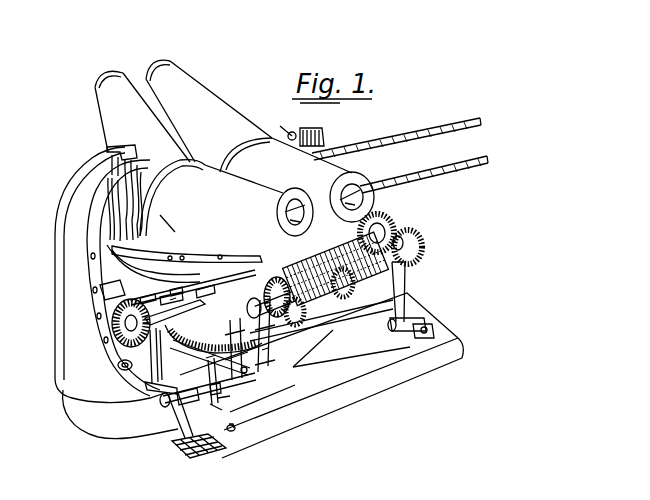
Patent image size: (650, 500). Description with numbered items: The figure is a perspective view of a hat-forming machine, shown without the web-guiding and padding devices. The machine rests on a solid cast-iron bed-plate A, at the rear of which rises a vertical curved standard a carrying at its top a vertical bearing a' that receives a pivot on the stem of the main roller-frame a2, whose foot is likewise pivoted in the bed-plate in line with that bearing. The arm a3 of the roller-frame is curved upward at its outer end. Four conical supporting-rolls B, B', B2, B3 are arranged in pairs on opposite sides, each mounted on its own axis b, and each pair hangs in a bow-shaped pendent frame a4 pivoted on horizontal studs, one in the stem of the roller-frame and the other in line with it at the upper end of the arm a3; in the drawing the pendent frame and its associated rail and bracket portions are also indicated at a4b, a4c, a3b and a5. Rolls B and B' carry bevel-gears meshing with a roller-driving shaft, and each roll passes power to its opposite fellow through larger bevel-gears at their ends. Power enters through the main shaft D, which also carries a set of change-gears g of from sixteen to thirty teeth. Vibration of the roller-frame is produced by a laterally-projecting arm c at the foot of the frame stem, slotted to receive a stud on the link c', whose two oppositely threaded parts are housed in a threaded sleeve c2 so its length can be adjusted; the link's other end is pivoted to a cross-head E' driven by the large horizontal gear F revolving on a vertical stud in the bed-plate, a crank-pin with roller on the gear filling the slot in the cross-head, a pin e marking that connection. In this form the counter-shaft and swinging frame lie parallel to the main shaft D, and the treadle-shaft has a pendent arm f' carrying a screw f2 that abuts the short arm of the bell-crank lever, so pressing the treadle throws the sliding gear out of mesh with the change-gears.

The conical supporting-roll B is at (142, 116).
The conical supporting-roll B' is at (209, 111).
The conical supporting-roll B2 is at (226, 198).
The conical supporting-roll B3 is at (297, 180).
The arm of the roller-frame a3 is at (324, 128).
The pendent frame a4 is at (282, 127).
The vertical curved standard a is at (107, 271).
The vertical bearing a' is at (122, 160).
The lever a5 is at (125, 200).
The rail a4b is at (113, 205).
The rail a4c is at (187, 255).
The rail a3b is at (153, 263).
The main roller-frame a2 is at (112, 289).
The main shaft D is at (193, 289).
The laterally-projecting arm c is at (158, 316).
The link c' is at (146, 293).
The threaded sleeve c2 is at (178, 289).
The pin e is at (174, 305).
The cross-head gear F is at (213, 347).
The drum E' is at (316, 290).
The change-gears g is at (379, 239).
The bed-plate A is at (259, 375).
The pendent arm f' is at (208, 396).
The screw f2 is at (236, 416).
The axis b is at (320, 206).